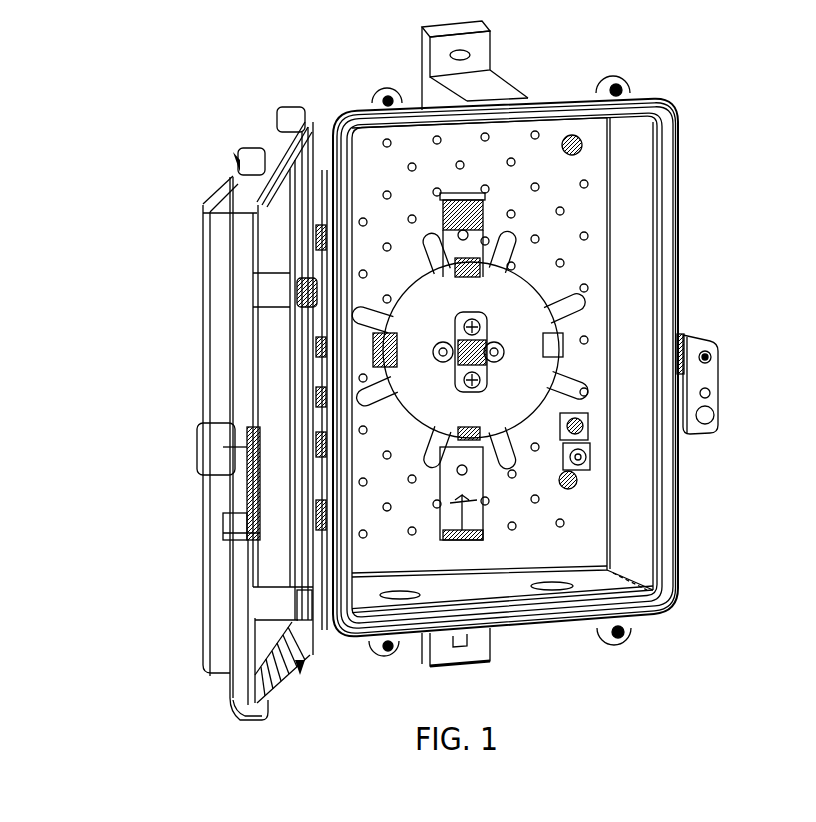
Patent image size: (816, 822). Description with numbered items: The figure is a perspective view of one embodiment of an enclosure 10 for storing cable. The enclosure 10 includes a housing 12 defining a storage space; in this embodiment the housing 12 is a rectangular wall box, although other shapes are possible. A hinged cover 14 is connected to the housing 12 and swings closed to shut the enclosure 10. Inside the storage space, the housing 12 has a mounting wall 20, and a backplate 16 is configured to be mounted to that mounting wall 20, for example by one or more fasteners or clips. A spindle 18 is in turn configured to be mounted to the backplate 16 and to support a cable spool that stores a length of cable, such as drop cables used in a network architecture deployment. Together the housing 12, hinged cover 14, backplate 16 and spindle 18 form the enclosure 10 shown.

The enclosure 10 is at (110, 125).
The housing 12 is at (342, 115).
The hinged cover 14 is at (222, 250).
The backplate 16 is at (513, 368).
The spindle 18 is at (478, 336).
The mounting wall 20 is at (588, 522).